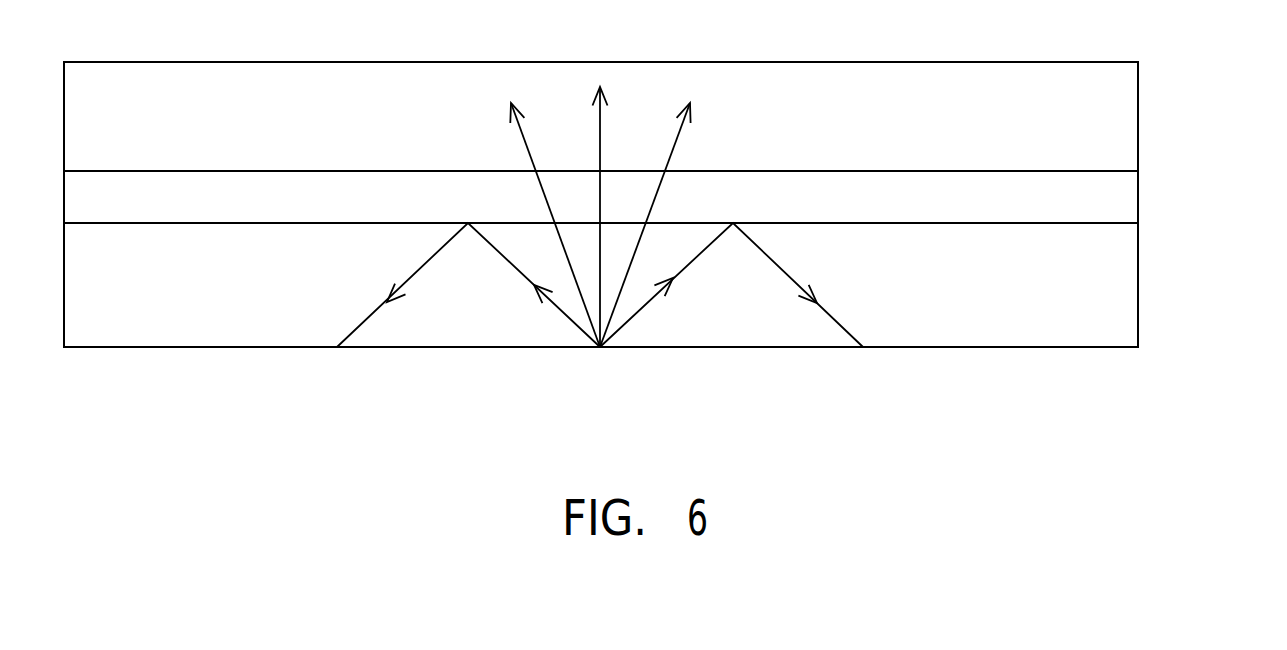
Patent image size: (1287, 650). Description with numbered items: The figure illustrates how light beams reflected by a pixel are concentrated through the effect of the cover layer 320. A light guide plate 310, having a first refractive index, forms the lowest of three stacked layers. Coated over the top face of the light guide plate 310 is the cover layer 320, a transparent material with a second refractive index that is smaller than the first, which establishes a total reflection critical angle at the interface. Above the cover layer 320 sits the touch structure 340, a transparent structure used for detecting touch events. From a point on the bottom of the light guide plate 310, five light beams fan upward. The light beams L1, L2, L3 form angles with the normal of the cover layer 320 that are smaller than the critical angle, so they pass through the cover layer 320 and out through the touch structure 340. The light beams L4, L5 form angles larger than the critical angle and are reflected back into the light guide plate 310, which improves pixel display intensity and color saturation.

The touch structure 340 is at (1121, 116).
The cover layer 320 is at (1117, 199).
The light guide plate 310 is at (1113, 289).
The light beam L1 is at (549, 208).
The light beam L2 is at (600, 202).
The light beam L3 is at (653, 208).
The light beam L4 is at (731, 285).
The light beam L5 is at (468, 285).